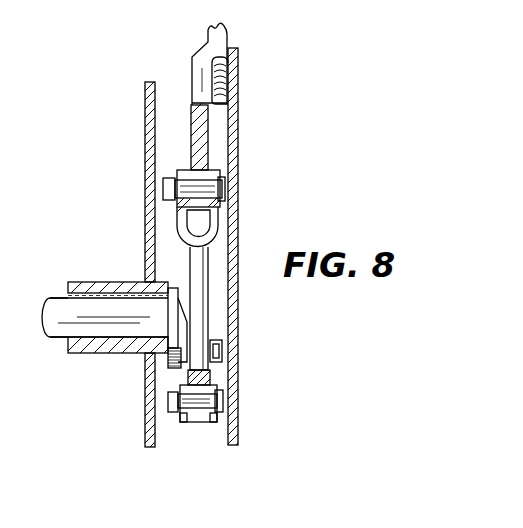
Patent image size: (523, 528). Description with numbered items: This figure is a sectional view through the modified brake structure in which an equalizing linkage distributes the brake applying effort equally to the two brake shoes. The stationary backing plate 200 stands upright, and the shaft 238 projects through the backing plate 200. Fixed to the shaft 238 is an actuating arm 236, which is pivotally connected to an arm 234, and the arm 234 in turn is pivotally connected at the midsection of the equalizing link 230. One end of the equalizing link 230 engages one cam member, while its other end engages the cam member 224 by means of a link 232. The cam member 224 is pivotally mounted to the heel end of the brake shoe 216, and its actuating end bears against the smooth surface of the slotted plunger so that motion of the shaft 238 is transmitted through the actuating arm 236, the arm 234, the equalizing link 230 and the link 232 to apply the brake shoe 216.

The backing plate 200 is at (240, 118).
The brake shoe 216 is at (147, 212).
The cam member 224 is at (227, 33).
The equalizing link 230 is at (182, 423).
The link 232 is at (196, 305).
The arm 234 is at (224, 341).
The actuating arm 236 is at (172, 362).
The shaft 238 is at (70, 322).